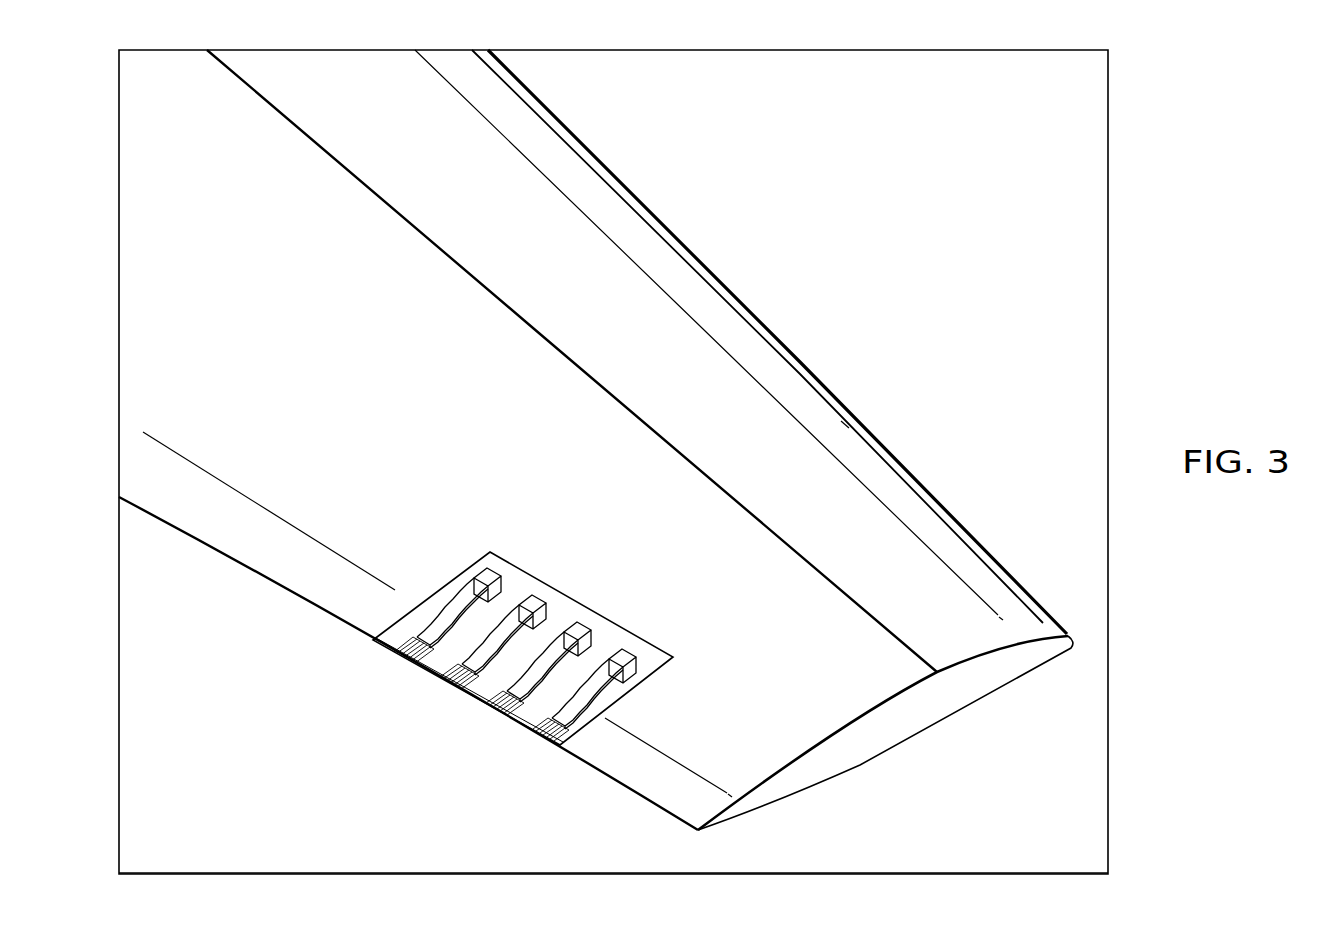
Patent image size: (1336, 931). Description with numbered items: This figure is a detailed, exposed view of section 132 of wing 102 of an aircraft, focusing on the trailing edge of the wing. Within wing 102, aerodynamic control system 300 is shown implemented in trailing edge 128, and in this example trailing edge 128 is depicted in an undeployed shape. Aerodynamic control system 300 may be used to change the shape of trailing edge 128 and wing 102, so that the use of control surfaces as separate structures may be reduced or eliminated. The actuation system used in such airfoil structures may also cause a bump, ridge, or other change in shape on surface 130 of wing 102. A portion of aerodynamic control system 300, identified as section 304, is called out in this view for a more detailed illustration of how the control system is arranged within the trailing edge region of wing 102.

The wing 102 is at (613, 142).
The trailing edge 128 is at (277, 587).
The surface 130 is at (848, 414).
The section 132 is at (1108, 322).
The aerodynamic control system 300 is at (464, 692).
The section 304 is at (633, 689).